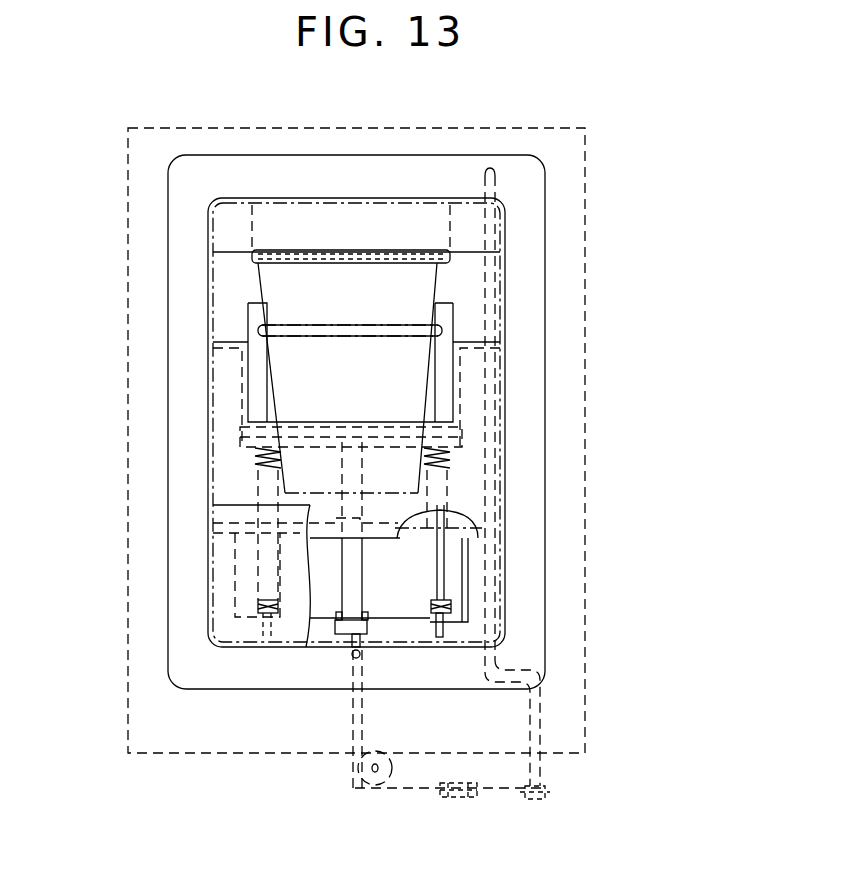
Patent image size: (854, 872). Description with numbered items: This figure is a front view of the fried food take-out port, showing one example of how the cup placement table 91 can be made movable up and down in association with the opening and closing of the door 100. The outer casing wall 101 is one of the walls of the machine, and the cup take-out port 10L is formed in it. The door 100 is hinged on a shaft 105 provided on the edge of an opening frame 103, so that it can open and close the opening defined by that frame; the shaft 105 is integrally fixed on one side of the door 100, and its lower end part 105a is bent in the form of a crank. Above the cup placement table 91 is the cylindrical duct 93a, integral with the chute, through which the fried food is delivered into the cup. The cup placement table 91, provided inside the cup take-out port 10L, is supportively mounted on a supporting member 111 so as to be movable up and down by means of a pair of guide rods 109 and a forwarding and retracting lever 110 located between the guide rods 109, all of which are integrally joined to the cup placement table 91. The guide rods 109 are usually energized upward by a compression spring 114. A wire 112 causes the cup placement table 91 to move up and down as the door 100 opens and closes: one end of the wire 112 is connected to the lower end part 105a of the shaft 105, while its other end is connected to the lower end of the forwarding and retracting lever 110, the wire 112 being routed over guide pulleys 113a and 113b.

The outer casing wall 101 is at (232, 128).
The cup take-out port 10L is at (402, 158).
The opening frame 103 is at (182, 376).
The door 100 is at (215, 446).
The cylindrical duct 93a is at (252, 258).
The cup placement table 91 is at (462, 474).
The shaft 105 is at (487, 380).
The lower end part of shaft 105a is at (540, 768).
The guide rods 109 is at (258, 571).
The compression spring 114 is at (262, 604).
The forwarding and retracting lever 110 is at (350, 602).
The supporting member 111 is at (468, 555).
The wire 112 is at (352, 698).
The guide pulley 113a is at (356, 782).
The guide pulley 113b is at (462, 800).